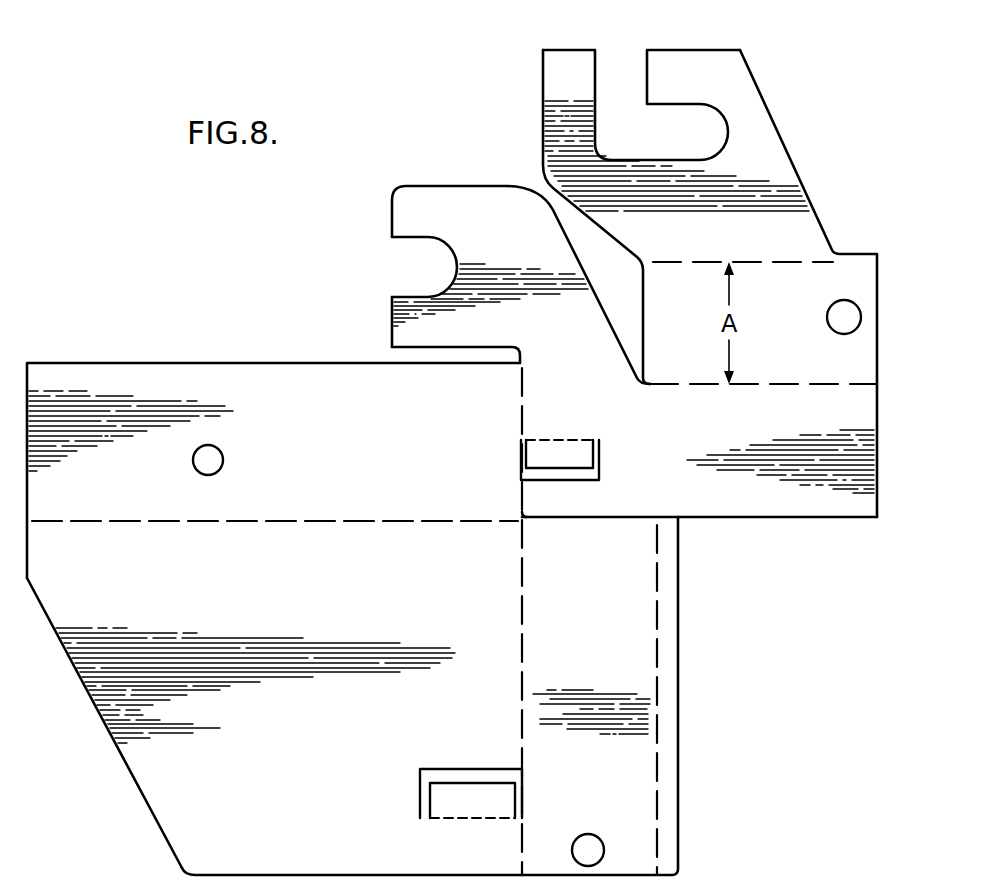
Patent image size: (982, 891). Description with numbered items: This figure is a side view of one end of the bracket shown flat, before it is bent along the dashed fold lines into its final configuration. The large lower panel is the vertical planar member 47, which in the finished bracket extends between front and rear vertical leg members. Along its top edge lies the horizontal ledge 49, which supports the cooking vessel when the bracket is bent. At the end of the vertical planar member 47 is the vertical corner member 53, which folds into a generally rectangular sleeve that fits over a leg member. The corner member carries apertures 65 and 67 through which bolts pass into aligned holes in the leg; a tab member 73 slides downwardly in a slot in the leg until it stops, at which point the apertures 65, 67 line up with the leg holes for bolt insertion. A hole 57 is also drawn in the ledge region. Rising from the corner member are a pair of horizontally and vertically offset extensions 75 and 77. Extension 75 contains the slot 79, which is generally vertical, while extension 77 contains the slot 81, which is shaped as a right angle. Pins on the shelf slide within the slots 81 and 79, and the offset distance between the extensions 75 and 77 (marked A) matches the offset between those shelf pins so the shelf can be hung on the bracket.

The vertical planar member 47 is at (145, 748).
The horizontal ledge 49 is at (132, 365).
The vertical corner member 53 is at (707, 611).
The hole 57 is at (223, 460).
The aperture 65 is at (839, 328).
The aperture 67 is at (600, 837).
The tab member 73 is at (577, 445).
The extension 75 is at (428, 203).
The extension 77 is at (767, 128).
The slot 79 is at (401, 262).
The slot 81 is at (619, 62).